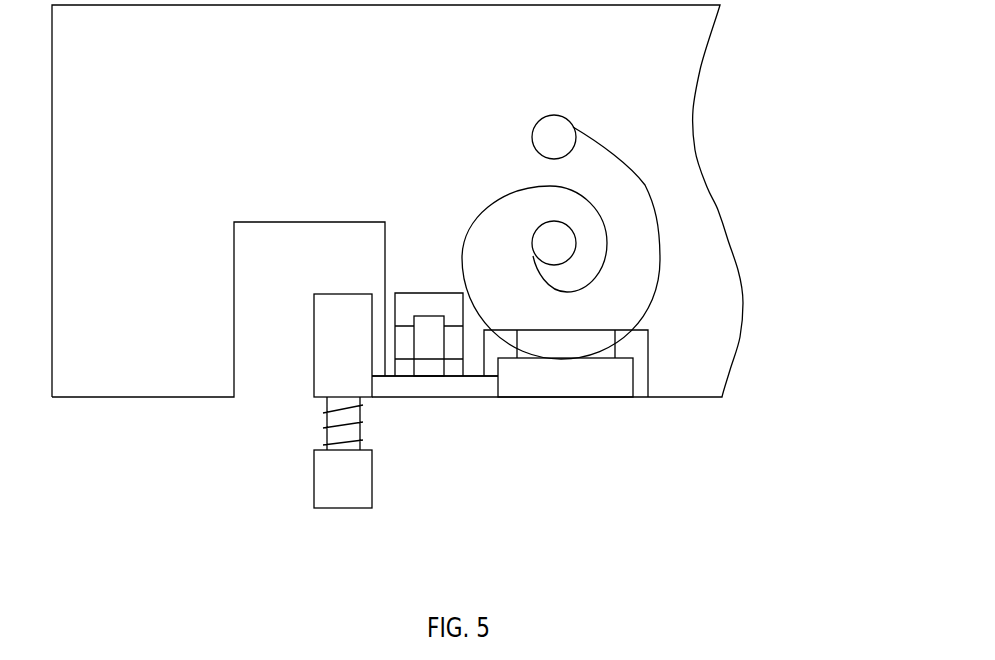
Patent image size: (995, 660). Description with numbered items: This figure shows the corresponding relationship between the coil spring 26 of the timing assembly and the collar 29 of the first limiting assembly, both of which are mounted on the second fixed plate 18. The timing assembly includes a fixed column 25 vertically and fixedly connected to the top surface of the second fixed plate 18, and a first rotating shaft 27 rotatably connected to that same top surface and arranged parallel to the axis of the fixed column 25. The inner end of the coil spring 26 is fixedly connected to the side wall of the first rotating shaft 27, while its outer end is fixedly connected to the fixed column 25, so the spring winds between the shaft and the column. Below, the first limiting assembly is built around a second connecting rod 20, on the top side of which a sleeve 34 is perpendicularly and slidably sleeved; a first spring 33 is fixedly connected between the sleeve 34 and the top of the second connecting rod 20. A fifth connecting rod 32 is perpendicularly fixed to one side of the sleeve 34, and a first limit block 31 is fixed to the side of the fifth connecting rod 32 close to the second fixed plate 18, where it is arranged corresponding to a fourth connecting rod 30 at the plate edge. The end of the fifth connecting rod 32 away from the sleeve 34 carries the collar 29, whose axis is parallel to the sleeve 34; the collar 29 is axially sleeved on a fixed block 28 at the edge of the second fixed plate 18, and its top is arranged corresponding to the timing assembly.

The second fixed plate 18 is at (665, 78).
The fixed column 25 is at (567, 133).
The coil spring 26 is at (642, 186).
The first rotating shaft 27 is at (555, 243).
The fixed block 28 is at (590, 342).
The collar 29 is at (623, 373).
The fourth connecting rod 30 is at (457, 343).
The first limit block 31 is at (429, 350).
The fifth connecting rod 32 is at (410, 387).
The first spring 33 is at (327, 417).
The second connecting rod 20 is at (343, 480).
The sleeve 34 is at (342, 347).